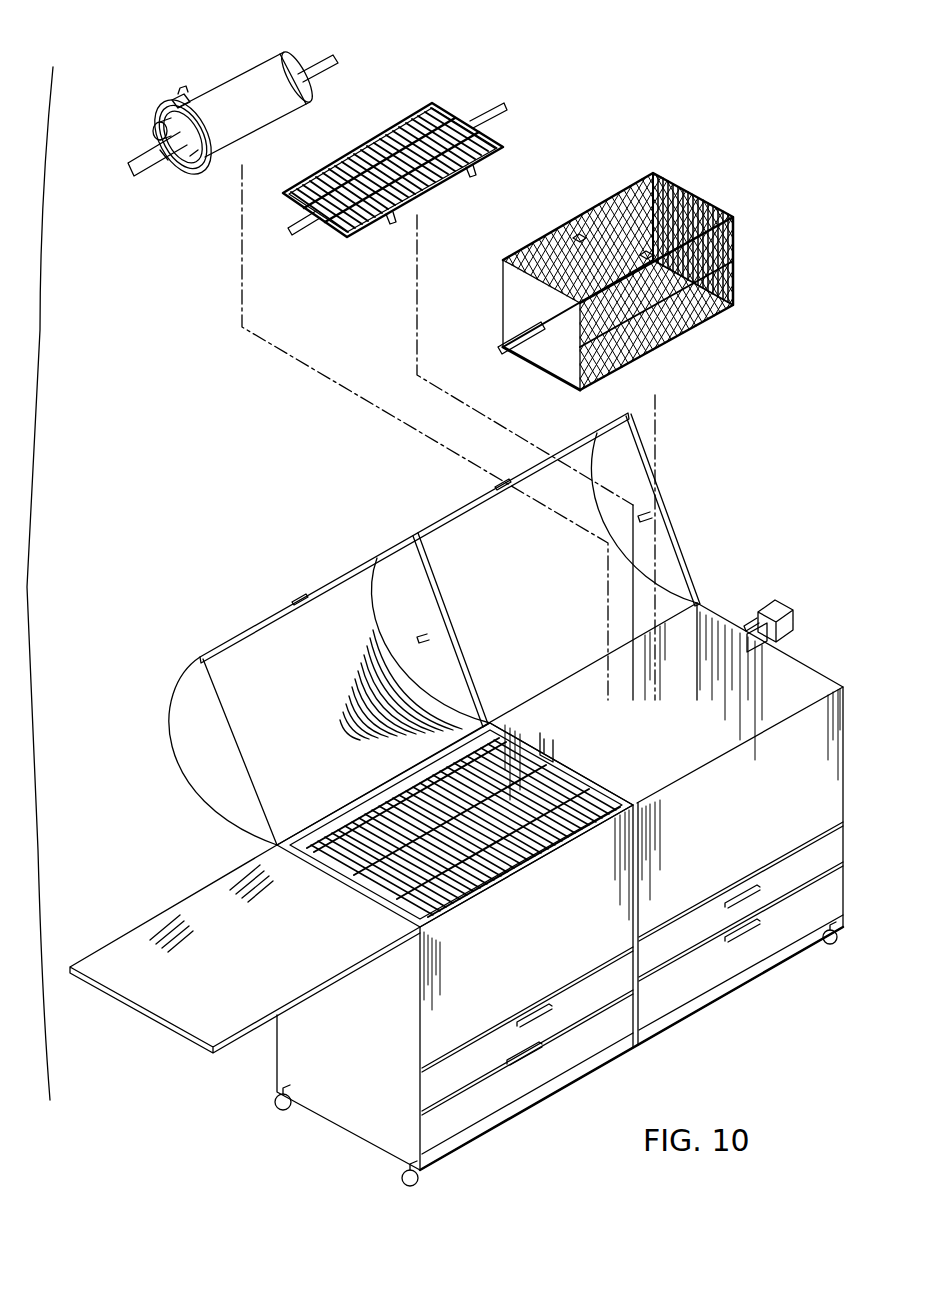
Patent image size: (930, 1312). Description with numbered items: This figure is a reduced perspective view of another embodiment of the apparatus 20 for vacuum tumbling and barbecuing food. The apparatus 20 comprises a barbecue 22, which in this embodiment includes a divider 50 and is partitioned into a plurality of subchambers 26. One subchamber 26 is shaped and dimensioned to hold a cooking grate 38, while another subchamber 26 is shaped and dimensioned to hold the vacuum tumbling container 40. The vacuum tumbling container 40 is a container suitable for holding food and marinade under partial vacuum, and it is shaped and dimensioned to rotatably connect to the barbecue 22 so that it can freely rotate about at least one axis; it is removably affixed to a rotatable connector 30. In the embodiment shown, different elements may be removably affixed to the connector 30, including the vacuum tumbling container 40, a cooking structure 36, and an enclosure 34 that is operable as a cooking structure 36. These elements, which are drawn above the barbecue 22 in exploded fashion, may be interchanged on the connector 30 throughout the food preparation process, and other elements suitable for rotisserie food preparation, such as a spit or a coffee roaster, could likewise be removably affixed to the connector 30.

The apparatus 20 is at (144, 331).
The barbecue 22 is at (239, 484).
The subchamber 26 is at (798, 674).
The rotatable connector 30 is at (128, 140).
The enclosure 34 is at (580, 217).
The cooking structure 36 is at (343, 153).
The cooking grate 38 is at (294, 832).
The vacuum tumbling container 40 is at (197, 97).
The divider 50 is at (609, 744).